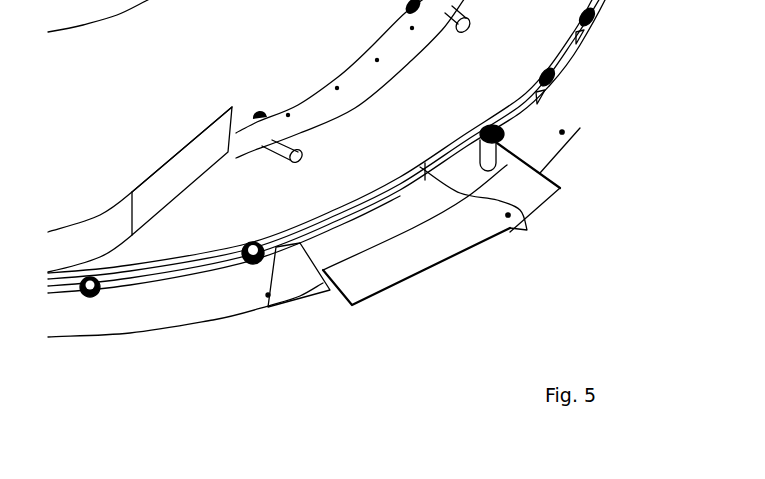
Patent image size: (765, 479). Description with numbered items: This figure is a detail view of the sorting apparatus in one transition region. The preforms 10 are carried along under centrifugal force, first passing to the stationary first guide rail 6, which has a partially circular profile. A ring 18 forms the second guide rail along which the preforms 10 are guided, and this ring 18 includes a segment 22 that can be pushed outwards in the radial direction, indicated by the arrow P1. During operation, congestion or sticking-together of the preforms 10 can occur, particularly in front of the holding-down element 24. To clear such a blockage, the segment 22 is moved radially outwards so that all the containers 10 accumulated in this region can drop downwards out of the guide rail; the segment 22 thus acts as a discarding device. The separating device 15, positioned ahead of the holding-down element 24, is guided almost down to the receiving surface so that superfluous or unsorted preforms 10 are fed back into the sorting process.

The first guide rail 6 is at (341, 85).
The preform 10 is at (90, 290).
The separating device 15 is at (164, 193).
The ring 18 is at (212, 298).
The segment 22 is at (445, 228).
The holding-down element 24 is at (523, 210).
The arrow P1 is at (490, 265).